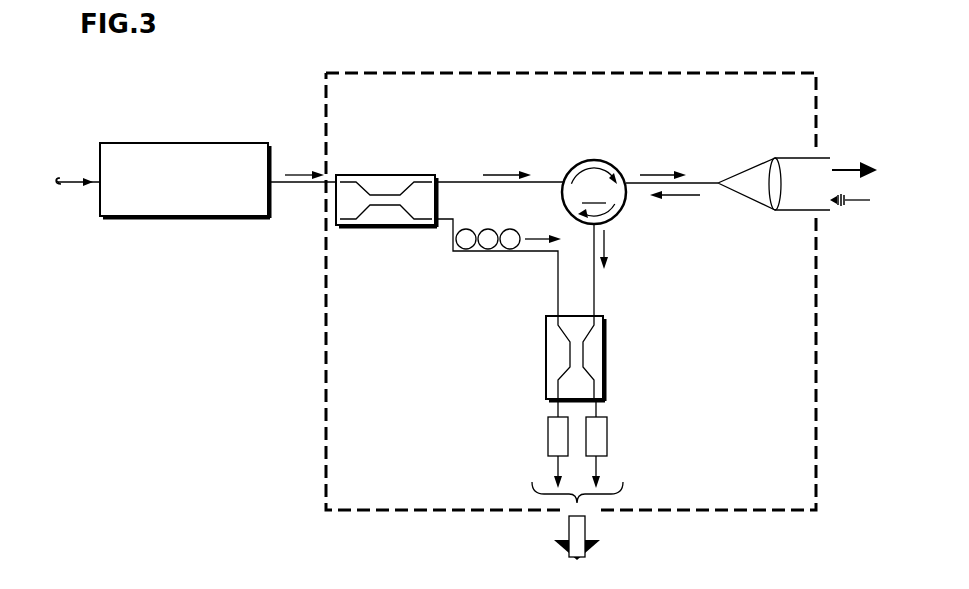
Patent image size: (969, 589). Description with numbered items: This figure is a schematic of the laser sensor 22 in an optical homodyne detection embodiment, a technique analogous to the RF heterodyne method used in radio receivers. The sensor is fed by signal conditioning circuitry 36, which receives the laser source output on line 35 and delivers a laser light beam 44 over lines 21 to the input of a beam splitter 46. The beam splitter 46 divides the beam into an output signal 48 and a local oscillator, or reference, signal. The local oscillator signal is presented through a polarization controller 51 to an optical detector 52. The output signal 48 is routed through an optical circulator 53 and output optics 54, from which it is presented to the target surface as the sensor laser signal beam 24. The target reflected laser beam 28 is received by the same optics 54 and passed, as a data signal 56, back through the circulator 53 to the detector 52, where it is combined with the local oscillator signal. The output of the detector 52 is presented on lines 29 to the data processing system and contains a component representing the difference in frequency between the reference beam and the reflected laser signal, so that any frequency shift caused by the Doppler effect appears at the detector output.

The lines 21 is at (273, 186).
The laser sensor 22 is at (318, 97).
The sensor laser signal beam 24 is at (843, 168).
The target reflected laser beam 28 is at (851, 201).
The lines 29 is at (572, 528).
The line 35 is at (80, 177).
The signal conditioning circuitry 36 is at (180, 143).
The laser light beam 44 is at (297, 175).
The beam splitter 46 is at (434, 176).
The output signal 48 is at (500, 173).
The polarization controller 51 is at (457, 234).
The optical detector 52 is at (605, 346).
The optical circulator 53 is at (594, 213).
The output optics 54 is at (753, 194).
The data signal 56 is at (687, 198).